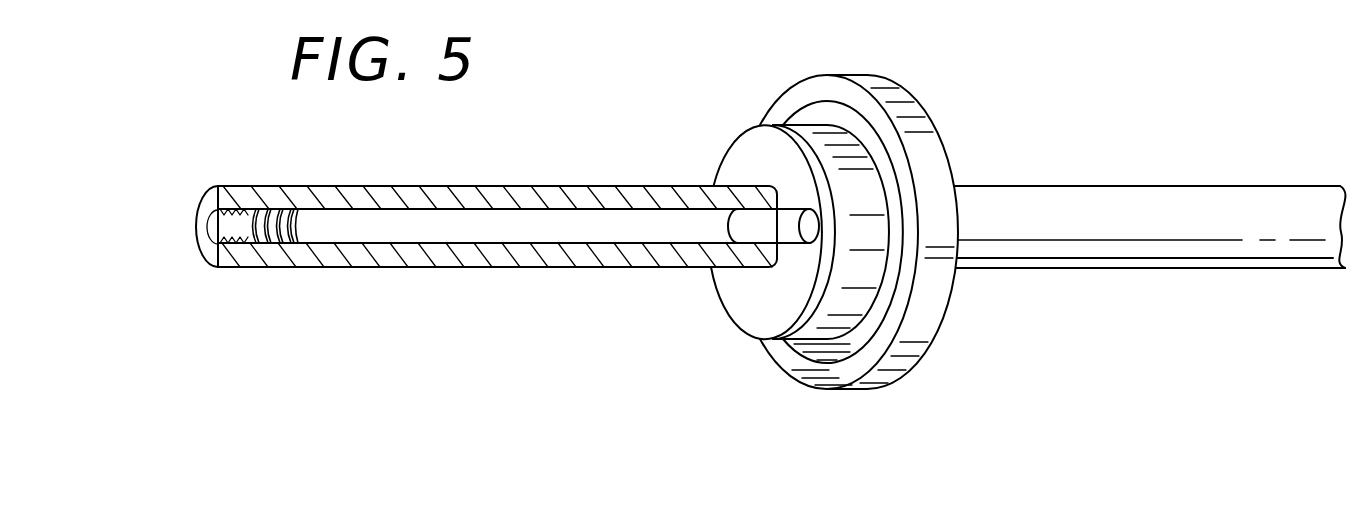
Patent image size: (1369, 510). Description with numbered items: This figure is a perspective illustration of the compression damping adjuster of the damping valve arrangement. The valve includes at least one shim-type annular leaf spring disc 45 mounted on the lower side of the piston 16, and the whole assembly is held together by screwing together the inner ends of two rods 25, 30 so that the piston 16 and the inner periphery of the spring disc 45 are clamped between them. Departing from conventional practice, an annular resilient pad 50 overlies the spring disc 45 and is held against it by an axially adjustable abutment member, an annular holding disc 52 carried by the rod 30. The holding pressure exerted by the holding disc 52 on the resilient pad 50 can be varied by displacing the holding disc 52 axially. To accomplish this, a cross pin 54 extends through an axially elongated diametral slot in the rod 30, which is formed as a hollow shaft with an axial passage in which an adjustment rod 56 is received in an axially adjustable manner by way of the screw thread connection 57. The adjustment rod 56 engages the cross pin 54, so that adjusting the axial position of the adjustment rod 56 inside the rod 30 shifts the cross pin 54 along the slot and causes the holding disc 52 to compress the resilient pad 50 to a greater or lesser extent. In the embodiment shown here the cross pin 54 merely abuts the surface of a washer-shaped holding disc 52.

The piston 16 is at (930, 327).
The rod 25 is at (1197, 245).
The rod 30 is at (403, 258).
The spring disc 45 is at (838, 350).
The resilient pad 50 is at (822, 145).
The holding disc 52 is at (738, 153).
The cross pin 54 is at (767, 232).
The adjustment rod 56 is at (430, 218).
The screw thread connection 57 is at (230, 228).